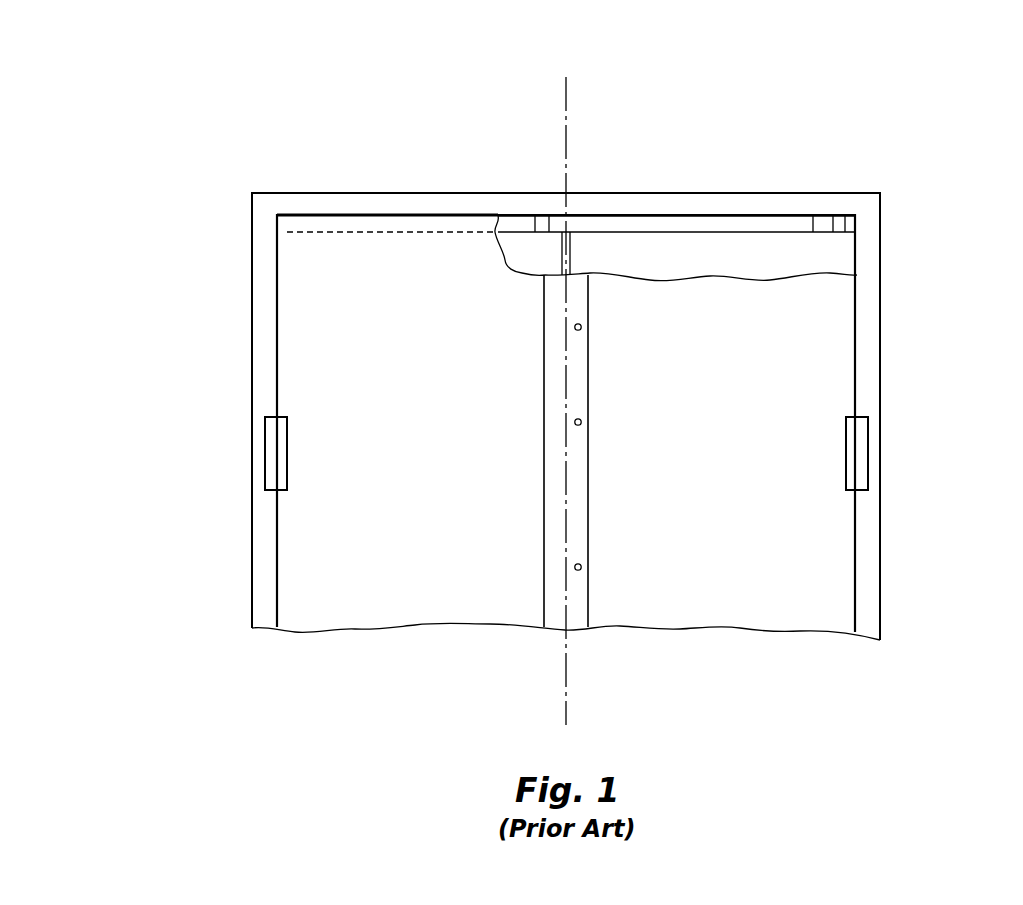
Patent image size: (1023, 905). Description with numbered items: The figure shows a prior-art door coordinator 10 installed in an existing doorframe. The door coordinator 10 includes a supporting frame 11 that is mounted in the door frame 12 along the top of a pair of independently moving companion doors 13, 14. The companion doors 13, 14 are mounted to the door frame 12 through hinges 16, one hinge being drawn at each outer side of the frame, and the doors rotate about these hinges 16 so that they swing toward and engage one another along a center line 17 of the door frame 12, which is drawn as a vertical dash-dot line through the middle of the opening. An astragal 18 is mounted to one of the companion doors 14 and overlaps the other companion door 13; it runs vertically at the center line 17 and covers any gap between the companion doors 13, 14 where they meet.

The door coordinator 10 is at (157, 197).
The supporting frame 11 is at (762, 226).
The door frame 12 is at (689, 193).
The companion door 13 is at (411, 326).
The companion door 14 is at (701, 355).
The hinges 16 is at (277, 446).
The center line 17 is at (567, 113).
The astragal 18 is at (579, 615).